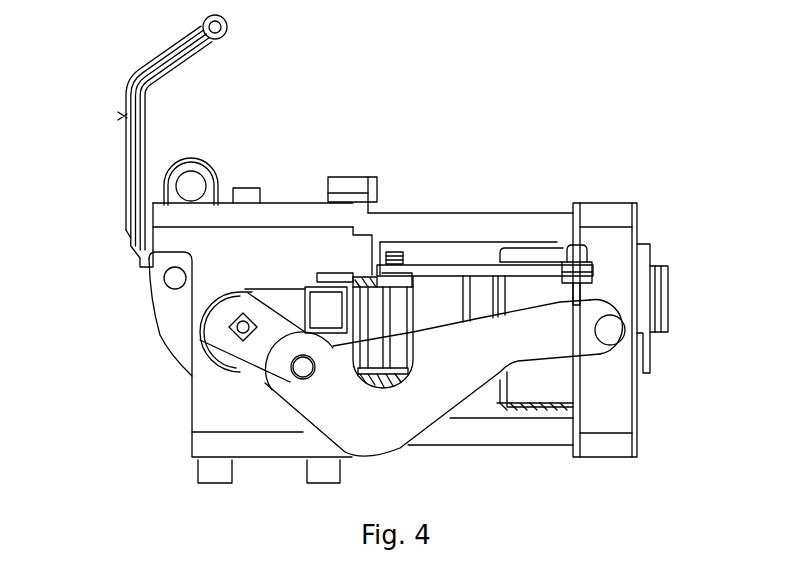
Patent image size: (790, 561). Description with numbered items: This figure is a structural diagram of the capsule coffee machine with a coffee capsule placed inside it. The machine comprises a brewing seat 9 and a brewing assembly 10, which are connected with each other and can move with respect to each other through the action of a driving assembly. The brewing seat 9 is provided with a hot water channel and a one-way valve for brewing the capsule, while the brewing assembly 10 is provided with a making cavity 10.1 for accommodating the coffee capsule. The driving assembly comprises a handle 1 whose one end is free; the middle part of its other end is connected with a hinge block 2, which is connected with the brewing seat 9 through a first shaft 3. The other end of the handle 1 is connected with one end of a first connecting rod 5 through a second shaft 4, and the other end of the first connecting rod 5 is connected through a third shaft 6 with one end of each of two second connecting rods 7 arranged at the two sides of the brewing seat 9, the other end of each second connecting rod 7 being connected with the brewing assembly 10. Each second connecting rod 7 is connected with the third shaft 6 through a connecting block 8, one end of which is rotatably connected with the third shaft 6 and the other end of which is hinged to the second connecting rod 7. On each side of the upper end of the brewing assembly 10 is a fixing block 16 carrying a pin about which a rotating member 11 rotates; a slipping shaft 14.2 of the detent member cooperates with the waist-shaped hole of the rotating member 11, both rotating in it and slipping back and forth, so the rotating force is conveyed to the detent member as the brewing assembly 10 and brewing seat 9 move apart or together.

The handle 1 is at (130, 82).
The hinge block 2 is at (122, 137).
The first shaft 3 is at (157, 168).
The second shaft 4 is at (173, 279).
The first connecting rod 5 is at (162, 307).
The third shaft 6 is at (240, 328).
The second connecting rod 7 is at (345, 423).
The connecting block 8 is at (270, 377).
The brewing seat 9 is at (263, 430).
The brewing assembly 10 is at (595, 300).
The making cavity 10.1 is at (543, 377).
The rotating member 11 is at (473, 272).
The slipping shaft 14.2 is at (397, 252).
The fixing block 16 is at (577, 292).